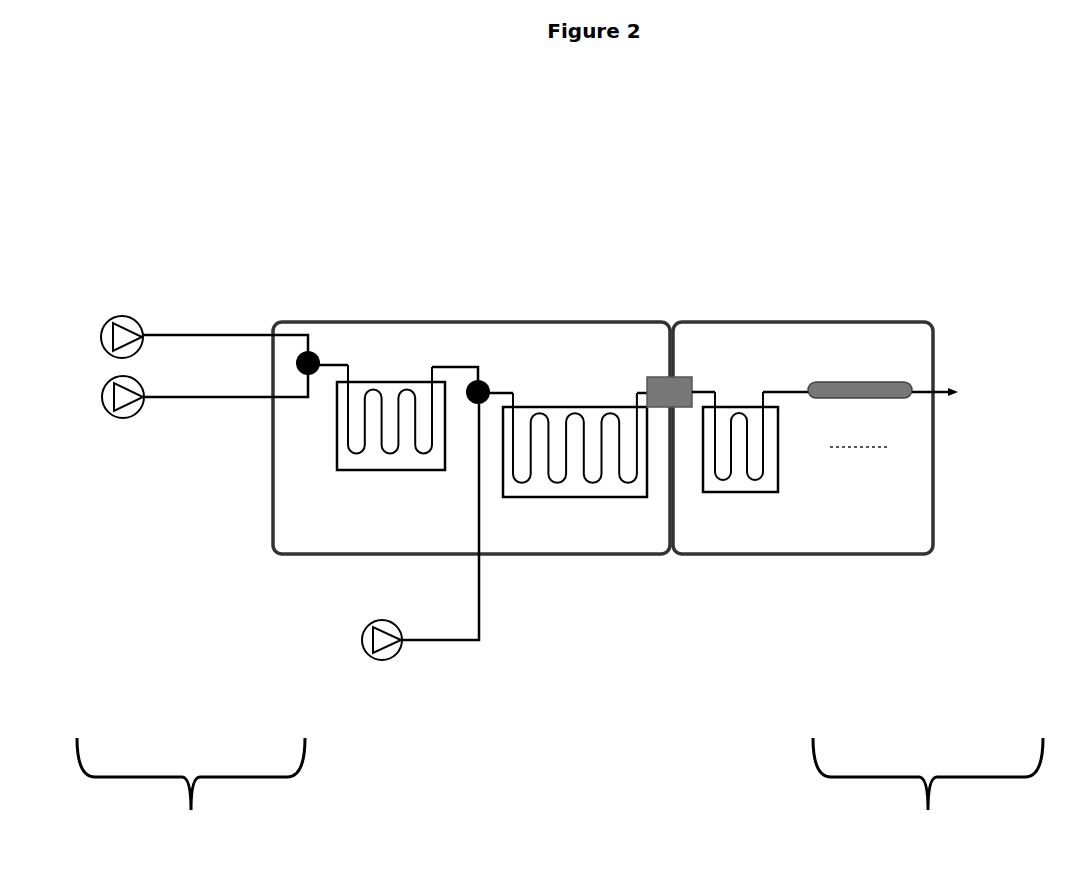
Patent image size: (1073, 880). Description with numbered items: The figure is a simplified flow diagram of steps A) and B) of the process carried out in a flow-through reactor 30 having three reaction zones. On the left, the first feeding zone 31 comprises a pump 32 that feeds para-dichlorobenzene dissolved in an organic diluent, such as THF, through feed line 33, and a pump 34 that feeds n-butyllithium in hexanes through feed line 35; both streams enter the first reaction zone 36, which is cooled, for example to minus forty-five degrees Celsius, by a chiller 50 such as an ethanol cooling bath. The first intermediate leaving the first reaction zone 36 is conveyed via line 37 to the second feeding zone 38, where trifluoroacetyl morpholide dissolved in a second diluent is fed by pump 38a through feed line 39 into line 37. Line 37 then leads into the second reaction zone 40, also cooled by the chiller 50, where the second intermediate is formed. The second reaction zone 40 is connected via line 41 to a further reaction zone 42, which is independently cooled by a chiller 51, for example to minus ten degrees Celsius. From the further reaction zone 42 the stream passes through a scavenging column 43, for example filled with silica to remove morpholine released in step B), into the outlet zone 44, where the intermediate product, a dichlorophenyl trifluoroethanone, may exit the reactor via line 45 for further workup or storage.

The flow-through reactor 30 is at (522, 207).
The first feeding zone 31 is at (191, 795).
The pump 32 is at (164, 314).
The feed line 33 is at (224, 317).
The pump 34 is at (143, 418).
The feed line 35 is at (226, 402).
The first reaction zone 36 is at (399, 382).
The line 37 is at (500, 378).
The second feeding zone 38 is at (492, 406).
The pump 38a is at (352, 639).
The feed line 39 is at (491, 581).
The second reaction zone 40 is at (621, 489).
The line 41 is at (684, 388).
The further reaction zone 42 is at (761, 489).
The scavenging column 43 is at (871, 410).
The outlet zone 44 is at (928, 795).
The line 45 is at (943, 404).
The chiller 50 is at (591, 317).
The chiller 51 is at (911, 313).